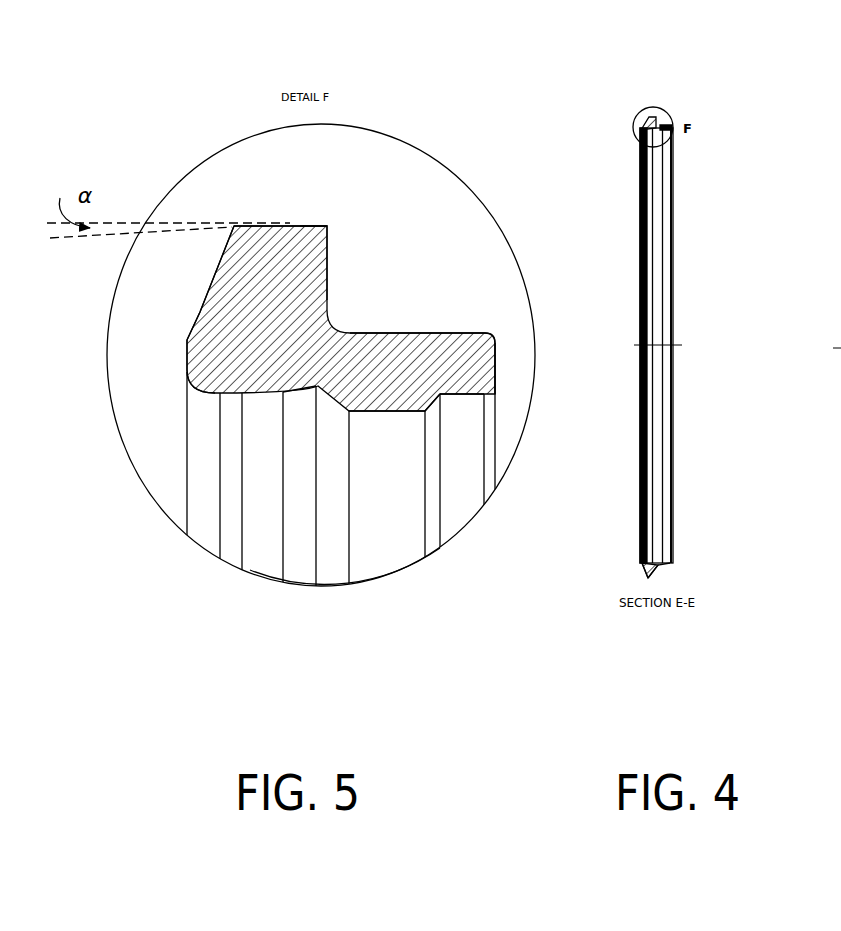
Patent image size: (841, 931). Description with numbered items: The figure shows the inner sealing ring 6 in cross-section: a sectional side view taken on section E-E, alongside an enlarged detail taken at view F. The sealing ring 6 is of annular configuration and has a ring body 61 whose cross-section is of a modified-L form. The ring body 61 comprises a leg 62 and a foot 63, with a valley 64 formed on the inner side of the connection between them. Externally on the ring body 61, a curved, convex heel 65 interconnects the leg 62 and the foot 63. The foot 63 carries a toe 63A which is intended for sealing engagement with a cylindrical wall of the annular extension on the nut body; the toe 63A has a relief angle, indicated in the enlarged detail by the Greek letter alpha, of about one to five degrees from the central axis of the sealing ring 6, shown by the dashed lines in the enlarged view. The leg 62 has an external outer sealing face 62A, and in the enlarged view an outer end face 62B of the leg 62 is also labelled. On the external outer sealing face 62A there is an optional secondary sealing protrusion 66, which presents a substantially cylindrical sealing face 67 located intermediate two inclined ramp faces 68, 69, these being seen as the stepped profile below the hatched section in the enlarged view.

In FIG. 4, the inner sealing ring 6 is at (693, 192).
In FIG. 5, the ring body 61 is at (283, 243).
In FIG. 4, the ring body 61 is at (639, 122).
In FIG. 5, the leg 62 is at (421, 356).
In FIG. 4, the leg 62 is at (657, 565).
In FIG. 5, the external outer sealing face 62A is at (457, 437).
In FIG. 5, the outer end face of base portion 62B is at (497, 362).
In FIG. 5, the foot 63 is at (239, 265).
In FIG. 4, the foot 63 is at (647, 580).
In FIG. 5, the toe 63A is at (328, 224).
In FIG. 5, the valley 64 is at (385, 315).
In FIG. 5, the heel 65 is at (200, 396).
In FIG. 4, the heel 65 is at (645, 567).
In FIG. 5, the secondary sealing protrusion 66 is at (395, 585).
In FIG. 5, the sealing face 67 is at (381, 545).
In FIG. 5, the inclined ramp face 68 is at (322, 545).
In FIG. 5, the inclined ramp face 69 is at (430, 517).